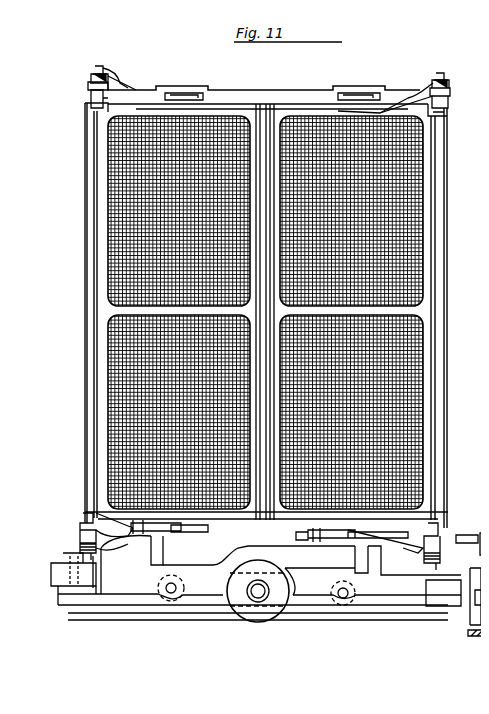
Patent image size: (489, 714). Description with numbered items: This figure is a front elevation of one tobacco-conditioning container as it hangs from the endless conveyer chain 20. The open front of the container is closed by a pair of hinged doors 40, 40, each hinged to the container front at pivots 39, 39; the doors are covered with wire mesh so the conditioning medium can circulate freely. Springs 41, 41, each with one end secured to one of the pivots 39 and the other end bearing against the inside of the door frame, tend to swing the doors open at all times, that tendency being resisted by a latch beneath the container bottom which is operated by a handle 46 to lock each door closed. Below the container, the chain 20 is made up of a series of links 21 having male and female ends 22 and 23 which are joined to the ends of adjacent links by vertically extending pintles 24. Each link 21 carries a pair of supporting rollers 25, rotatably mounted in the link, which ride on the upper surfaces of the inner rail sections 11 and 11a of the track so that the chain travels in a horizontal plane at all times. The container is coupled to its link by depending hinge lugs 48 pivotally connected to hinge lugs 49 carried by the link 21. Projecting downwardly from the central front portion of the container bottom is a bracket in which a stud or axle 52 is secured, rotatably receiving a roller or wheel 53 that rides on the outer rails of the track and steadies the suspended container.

The inner rail section 11 is at (193, 593).
The inner rail section 11a is at (183, 648).
The endless conveyer chain 20 is at (212, 587).
The link 21 is at (300, 580).
The male end 22 is at (443, 621).
The female end 23 is at (85, 580).
The pintle 24 is at (50, 590).
The supporting roller 25 is at (152, 592).
The hinge pivot 39 is at (90, 58).
The door 40 is at (218, 97).
The spring 41 is at (100, 68).
The handle 46 is at (120, 514).
The depending hinge lug 48 is at (155, 554).
The hinge lug 49 is at (130, 528).
The stud or axle 52 is at (262, 572).
The roller or wheel 53 is at (260, 610).